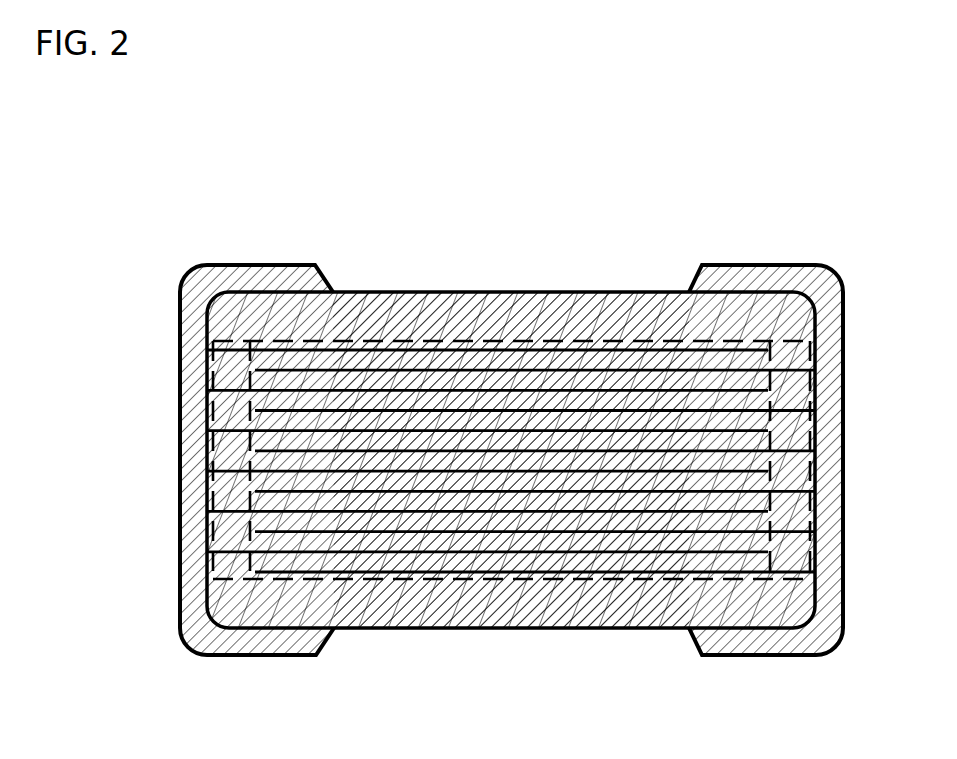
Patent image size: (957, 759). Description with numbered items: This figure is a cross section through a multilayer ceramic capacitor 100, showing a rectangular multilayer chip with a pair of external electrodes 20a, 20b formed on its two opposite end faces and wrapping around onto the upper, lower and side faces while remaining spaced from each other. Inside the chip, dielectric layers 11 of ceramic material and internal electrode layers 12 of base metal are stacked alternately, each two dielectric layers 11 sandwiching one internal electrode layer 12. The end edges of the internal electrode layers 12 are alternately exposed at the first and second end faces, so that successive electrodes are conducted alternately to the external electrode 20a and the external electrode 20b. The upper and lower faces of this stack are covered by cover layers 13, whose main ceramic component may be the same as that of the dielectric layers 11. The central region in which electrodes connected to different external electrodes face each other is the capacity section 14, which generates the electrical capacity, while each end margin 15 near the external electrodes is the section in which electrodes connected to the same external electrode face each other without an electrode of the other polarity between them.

The multilayer ceramic capacitor 100 is at (504, 406).
The dielectric layer 11 is at (635, 533).
The internal electrode layer 12 is at (452, 512).
The cover layer 13 is at (405, 308).
The capacity section 14 is at (537, 340).
The end margin 15 is at (232, 341).
The external electrode 20a is at (205, 267).
The external electrode 20b is at (807, 265).